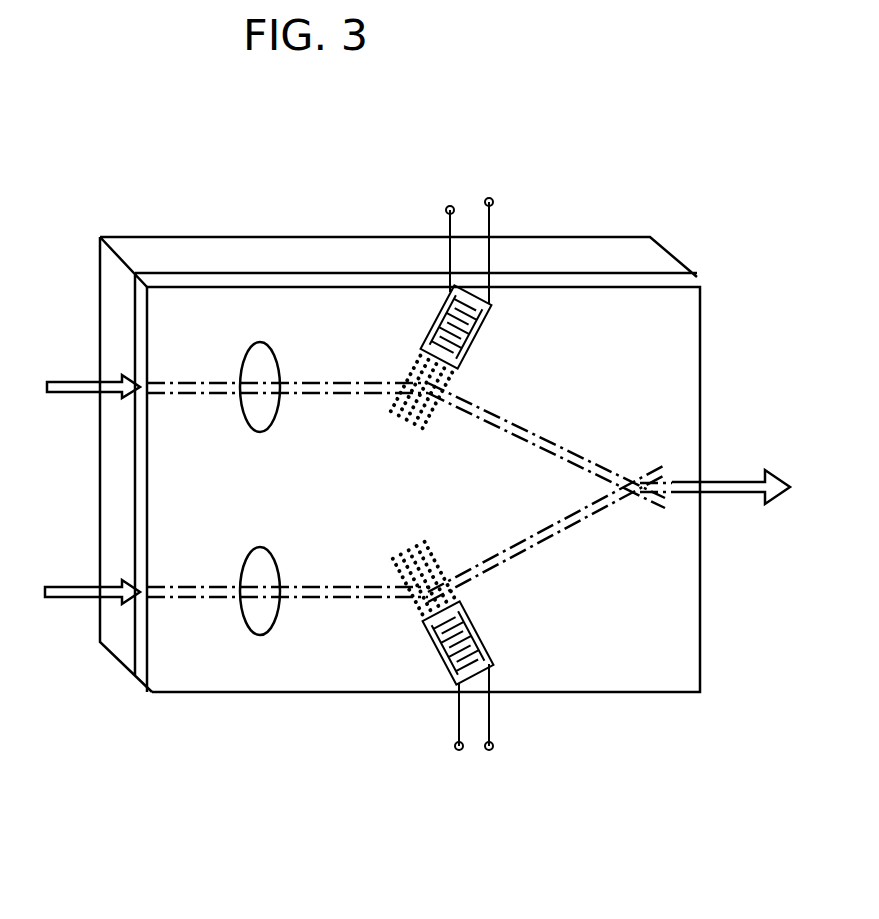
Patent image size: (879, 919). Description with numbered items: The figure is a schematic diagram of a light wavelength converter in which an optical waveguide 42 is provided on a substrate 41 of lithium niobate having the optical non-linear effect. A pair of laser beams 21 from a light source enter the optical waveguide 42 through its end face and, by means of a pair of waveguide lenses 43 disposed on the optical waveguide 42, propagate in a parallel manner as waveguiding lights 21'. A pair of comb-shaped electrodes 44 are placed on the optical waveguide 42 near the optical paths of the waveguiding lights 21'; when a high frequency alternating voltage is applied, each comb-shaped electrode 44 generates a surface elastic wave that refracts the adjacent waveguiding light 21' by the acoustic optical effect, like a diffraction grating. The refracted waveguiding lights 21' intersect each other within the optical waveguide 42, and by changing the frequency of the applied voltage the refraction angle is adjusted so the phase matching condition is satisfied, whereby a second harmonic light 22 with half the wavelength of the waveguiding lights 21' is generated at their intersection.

The laser beams 21 is at (92, 470).
The waveguiding lights 21' is at (409, 531).
The second harmonic light 22 is at (740, 478).
The substrate 41 is at (632, 250).
The optical waveguide 42 is at (698, 277).
The waveguide lenses 43 is at (264, 360).
The comb-shaped electrodes 44 is at (478, 336).